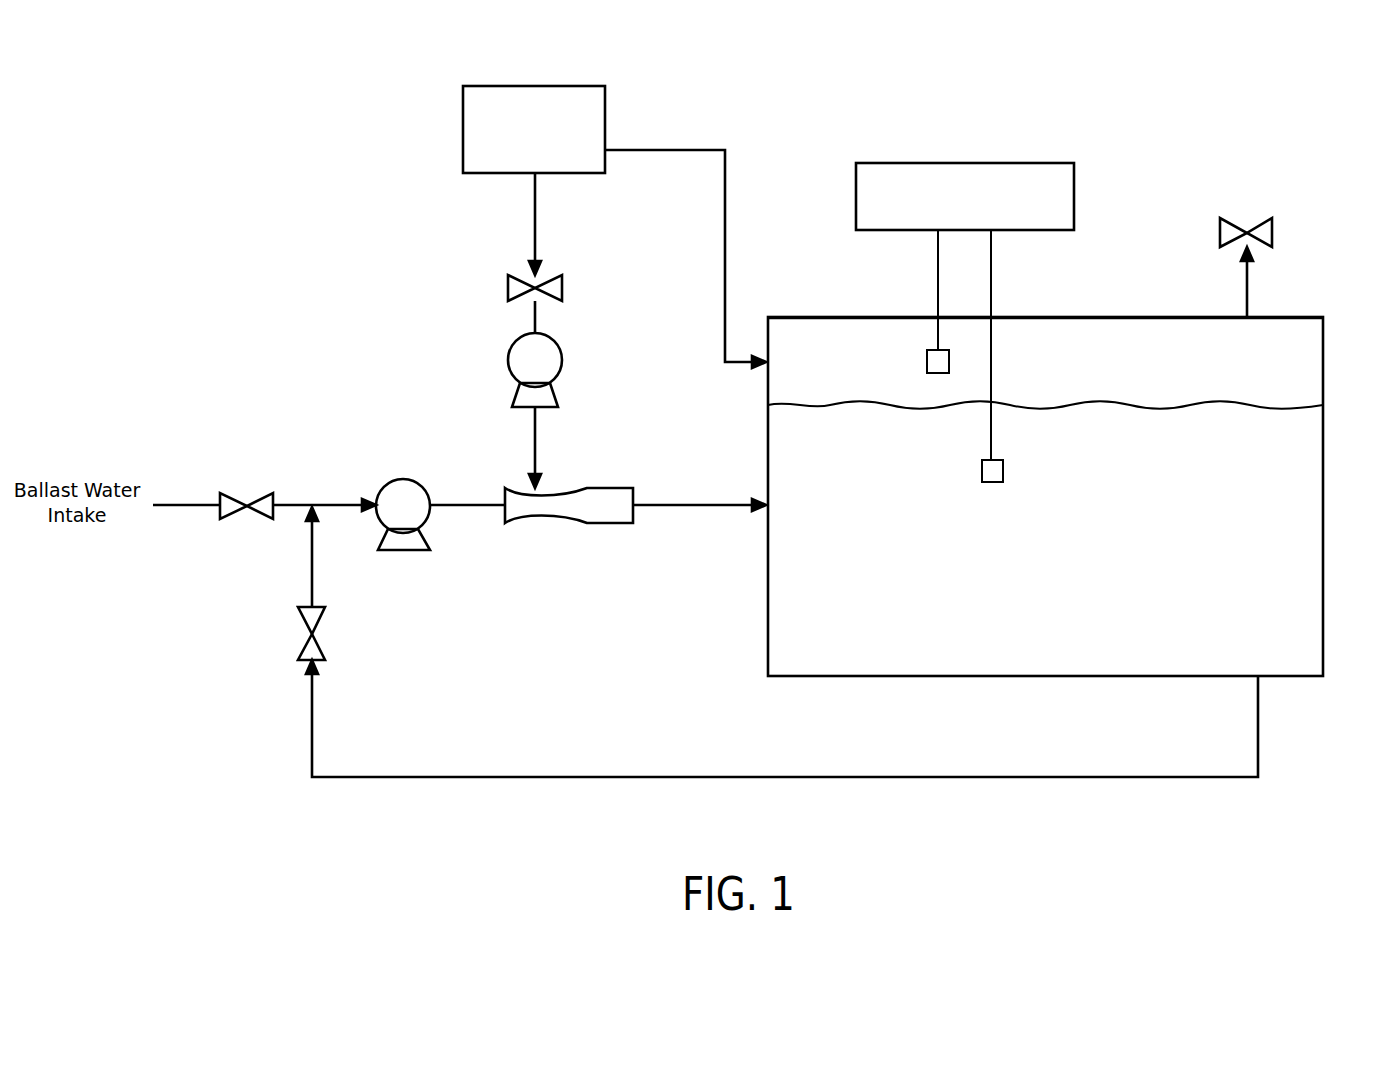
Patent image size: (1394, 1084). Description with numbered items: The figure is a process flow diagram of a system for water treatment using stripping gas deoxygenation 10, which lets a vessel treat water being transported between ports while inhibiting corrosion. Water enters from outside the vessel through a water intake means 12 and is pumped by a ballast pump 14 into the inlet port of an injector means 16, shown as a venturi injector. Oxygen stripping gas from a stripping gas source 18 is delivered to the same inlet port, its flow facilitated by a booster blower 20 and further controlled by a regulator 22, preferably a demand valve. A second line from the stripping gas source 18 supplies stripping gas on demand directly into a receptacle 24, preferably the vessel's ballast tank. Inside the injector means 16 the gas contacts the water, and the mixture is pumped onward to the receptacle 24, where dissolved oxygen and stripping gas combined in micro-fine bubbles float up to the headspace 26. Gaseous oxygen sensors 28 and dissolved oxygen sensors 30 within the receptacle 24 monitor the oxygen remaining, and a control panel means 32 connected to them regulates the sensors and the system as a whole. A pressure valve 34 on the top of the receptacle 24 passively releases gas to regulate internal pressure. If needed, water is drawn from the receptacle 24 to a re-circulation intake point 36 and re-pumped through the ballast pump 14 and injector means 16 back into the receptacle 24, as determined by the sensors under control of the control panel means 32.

The system for water treatment using stripping gas deoxygenation 10 is at (245, 362).
The water intake means 12 is at (233, 518).
The ballast pump 14 is at (395, 490).
The injector means 16 is at (607, 515).
The stripping gas source 18 is at (607, 130).
The booster blower 20 is at (555, 365).
The regulator 22 is at (507, 292).
The receptacle 24 is at (1315, 525).
The headspace 26 is at (1315, 353).
The gaseous oxygen sensors 28 is at (927, 362).
The dissolved oxygen sensors 30 is at (1005, 472).
The control panel means 32 is at (856, 193).
The pressure valve 34 is at (1272, 233).
The re-circulation intake point 36 is at (1258, 680).